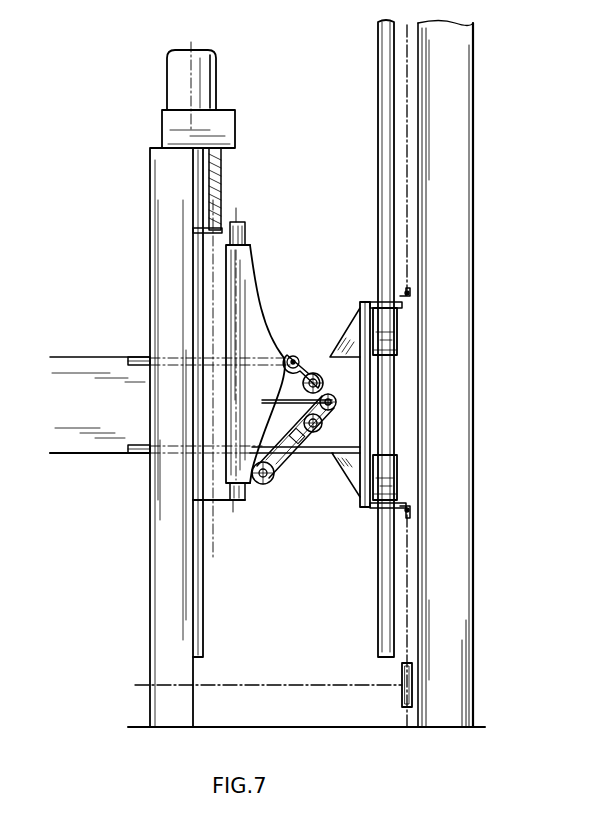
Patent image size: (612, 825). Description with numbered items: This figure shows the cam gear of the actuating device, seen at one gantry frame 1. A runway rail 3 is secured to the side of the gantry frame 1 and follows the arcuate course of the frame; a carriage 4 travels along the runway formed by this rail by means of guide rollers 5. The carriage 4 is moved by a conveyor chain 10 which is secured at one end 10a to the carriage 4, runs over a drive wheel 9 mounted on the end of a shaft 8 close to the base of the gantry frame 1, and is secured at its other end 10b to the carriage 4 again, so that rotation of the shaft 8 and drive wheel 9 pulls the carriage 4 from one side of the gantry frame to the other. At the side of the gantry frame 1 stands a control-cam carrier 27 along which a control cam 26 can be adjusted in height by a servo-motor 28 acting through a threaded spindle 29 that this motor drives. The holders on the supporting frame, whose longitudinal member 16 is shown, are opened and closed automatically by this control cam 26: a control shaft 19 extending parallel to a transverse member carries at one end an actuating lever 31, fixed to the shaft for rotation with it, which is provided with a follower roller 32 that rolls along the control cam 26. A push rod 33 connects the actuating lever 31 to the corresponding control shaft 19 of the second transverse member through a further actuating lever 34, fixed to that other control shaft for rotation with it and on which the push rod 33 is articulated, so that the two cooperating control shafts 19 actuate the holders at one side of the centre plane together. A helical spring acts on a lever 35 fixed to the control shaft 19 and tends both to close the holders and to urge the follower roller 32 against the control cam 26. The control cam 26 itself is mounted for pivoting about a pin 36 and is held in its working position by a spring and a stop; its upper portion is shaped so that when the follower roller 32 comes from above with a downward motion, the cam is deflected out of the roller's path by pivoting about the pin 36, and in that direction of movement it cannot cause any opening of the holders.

The gantry frame 1 is at (458, 670).
The runway rail 3 is at (386, 53).
The carriage 4 is at (360, 306).
The guide rollers 5 is at (392, 320).
The shaft 8 is at (320, 685).
The drive wheel 9 is at (402, 701).
The conveyor chain 10 is at (408, 152).
The end of conveyor chain 10a is at (412, 510).
The other end of conveyor chain 10b is at (412, 293).
The longitudinal member 16 is at (76, 456).
The control shaft 19 is at (318, 378).
The control cam 26 is at (248, 281).
The control-cam carrier 27 is at (150, 200).
The servo-motor 28 is at (216, 66).
The threaded spindle 29 is at (220, 198).
The actuating lever 31 is at (283, 462).
The follower roller 32 is at (266, 484).
The push rod 33 is at (133, 357).
The actuating lever 34 is at (297, 357).
The lever 35 is at (332, 404).
The pin 36 is at (233, 503).